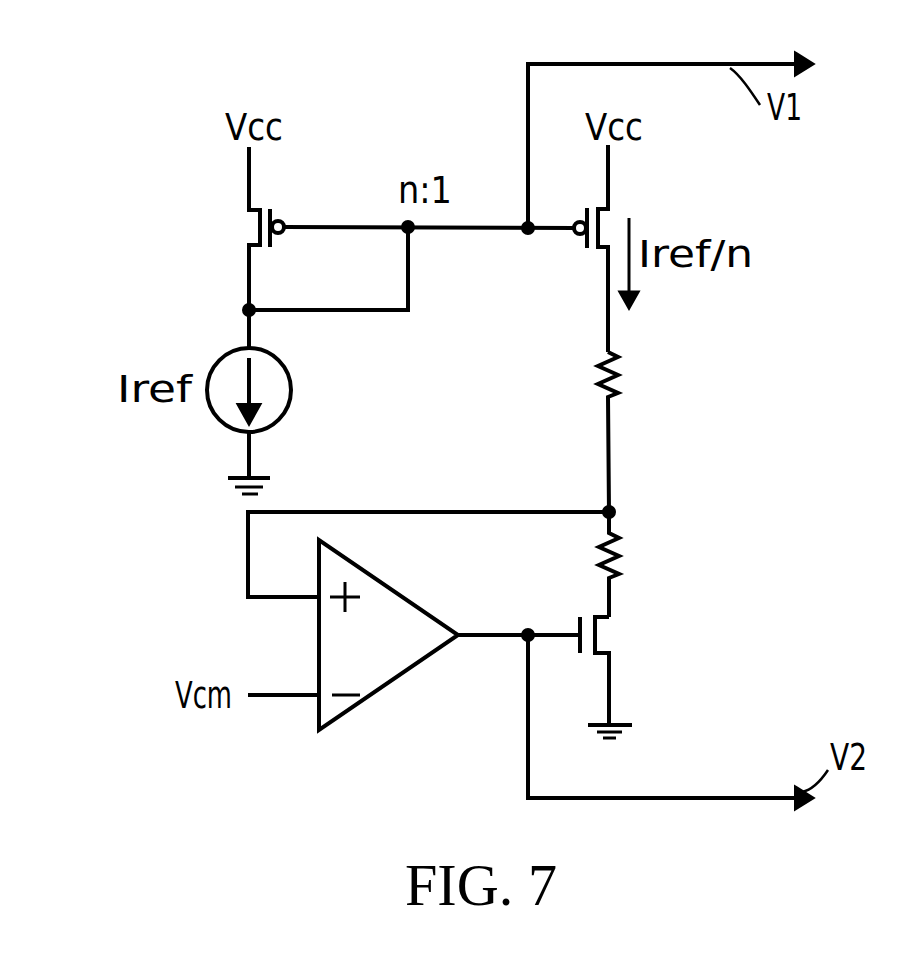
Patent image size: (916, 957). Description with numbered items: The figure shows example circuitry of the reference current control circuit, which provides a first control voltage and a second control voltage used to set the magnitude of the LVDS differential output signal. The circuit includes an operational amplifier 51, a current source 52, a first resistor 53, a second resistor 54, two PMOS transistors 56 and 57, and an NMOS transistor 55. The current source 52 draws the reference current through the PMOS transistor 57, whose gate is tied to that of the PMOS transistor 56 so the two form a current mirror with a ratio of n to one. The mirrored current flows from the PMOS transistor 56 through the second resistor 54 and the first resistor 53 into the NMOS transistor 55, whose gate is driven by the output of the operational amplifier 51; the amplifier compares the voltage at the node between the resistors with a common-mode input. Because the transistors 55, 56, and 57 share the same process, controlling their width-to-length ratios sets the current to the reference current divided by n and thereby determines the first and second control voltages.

The operational amplifier 51 is at (395, 677).
The current source 52 is at (215, 367).
The first resistor 53 is at (602, 563).
The second resistor 54 is at (600, 357).
The NMOS transistor 55 is at (613, 633).
The PMOS transistor 56 is at (620, 213).
The PMOS transistor 57 is at (247, 230).